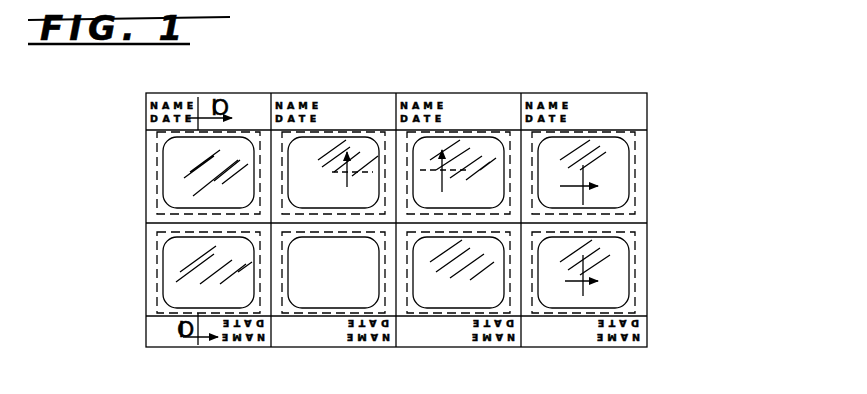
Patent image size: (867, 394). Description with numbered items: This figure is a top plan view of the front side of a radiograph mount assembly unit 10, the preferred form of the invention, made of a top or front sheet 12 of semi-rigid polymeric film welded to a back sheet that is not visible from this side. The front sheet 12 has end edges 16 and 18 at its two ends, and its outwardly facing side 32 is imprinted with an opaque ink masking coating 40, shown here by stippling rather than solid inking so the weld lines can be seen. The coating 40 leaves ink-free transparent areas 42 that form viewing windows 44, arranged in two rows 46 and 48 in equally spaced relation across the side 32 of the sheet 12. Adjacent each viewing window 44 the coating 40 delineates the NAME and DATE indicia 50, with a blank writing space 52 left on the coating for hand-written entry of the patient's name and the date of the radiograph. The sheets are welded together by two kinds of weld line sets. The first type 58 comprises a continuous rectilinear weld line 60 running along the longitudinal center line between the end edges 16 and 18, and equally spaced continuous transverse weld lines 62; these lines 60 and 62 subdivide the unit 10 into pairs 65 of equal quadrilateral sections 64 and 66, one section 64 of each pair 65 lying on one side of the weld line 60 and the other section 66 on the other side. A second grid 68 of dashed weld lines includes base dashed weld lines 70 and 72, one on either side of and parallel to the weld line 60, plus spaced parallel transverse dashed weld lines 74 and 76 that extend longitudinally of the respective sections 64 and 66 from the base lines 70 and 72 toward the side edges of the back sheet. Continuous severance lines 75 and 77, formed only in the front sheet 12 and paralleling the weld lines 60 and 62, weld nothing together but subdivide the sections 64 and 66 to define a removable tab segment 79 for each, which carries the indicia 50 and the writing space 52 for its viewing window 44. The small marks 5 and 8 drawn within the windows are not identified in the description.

The radiograph mount assembly unit 10 is at (652, 84).
The front sheet 12 is at (596, 102).
The end edge 16 is at (145, 333).
The end edge 18 is at (648, 316).
The forwardly facing side 32 is at (488, 112).
The masking coating 40 is at (453, 110).
The transparent area 42 is at (183, 174).
The viewing window 44 is at (185, 196).
The row of viewing windows 46 is at (656, 165).
The row of viewing windows 48 is at (543, 146).
The NAME and DATE indicia 50 is at (145, 104).
The blank writing space 52 is at (238, 106).
The first type of weld line grid 58 is at (656, 218).
The longitudinal weld line 60 is at (146, 222).
The transverse weld line 62 is at (521, 96).
The section 64 is at (363, 130).
The pair of sections 65 is at (626, 83).
The section 66 is at (640, 260).
The grid of dashed weld lines 68 is at (150, 142).
The dashed base weld line 70 is at (650, 205).
The dashed base weld line 72 is at (150, 228).
The transverse dashed weld line 74 is at (285, 142).
The severance line 75 is at (249, 129).
The transverse dashed weld line 76 is at (384, 144).
The severance line 77 is at (527, 317).
The tab segment 79 is at (168, 95).
The dimension marker 5 is at (411, 172).
The dimension marker 8 is at (587, 230).